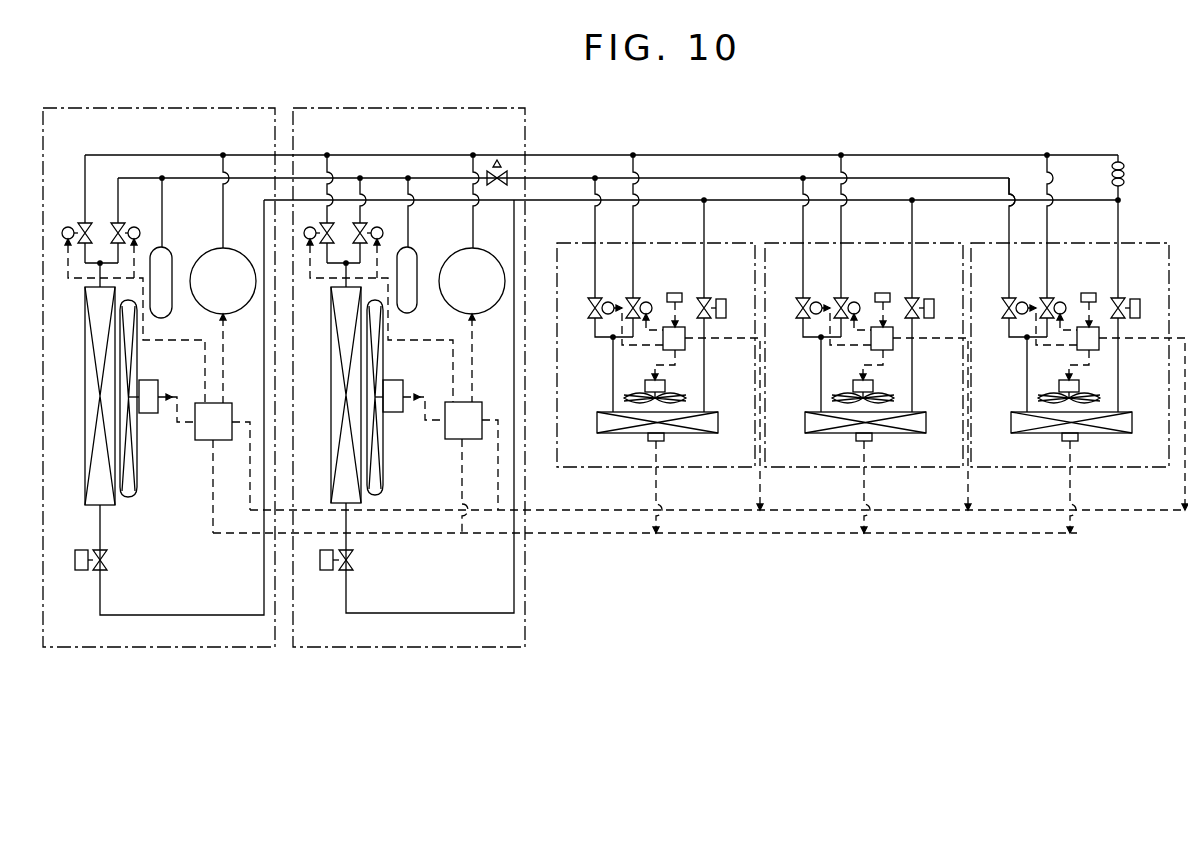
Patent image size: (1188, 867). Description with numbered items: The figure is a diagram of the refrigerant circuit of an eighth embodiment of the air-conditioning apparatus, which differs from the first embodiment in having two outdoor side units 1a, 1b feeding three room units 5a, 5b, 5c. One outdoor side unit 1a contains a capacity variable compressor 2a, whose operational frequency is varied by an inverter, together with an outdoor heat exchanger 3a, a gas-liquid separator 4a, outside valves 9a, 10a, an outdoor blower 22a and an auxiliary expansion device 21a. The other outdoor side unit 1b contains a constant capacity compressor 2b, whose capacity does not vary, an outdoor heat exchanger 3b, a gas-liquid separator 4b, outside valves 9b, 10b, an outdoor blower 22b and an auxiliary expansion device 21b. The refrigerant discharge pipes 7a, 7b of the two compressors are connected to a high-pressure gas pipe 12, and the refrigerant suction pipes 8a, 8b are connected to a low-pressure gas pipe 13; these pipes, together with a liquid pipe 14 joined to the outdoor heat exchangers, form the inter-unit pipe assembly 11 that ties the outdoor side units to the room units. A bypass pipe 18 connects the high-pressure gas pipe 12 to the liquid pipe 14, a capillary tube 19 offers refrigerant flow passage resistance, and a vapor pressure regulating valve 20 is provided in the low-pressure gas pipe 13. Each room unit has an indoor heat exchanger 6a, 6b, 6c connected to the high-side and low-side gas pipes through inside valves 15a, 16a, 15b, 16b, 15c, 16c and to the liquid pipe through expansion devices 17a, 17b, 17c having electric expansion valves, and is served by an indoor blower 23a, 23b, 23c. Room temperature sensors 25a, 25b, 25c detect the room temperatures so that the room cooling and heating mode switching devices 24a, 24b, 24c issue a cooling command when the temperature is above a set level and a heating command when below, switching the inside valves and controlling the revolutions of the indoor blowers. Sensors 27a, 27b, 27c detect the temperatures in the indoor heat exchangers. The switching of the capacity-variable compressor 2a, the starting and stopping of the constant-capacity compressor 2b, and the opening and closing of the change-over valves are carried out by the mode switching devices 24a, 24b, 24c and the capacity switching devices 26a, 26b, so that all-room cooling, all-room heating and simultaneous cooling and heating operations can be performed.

The outdoor side unit 1a is at (230, 648).
The outdoor side unit 1b is at (490, 650).
The capacity variable compressor 2a is at (233, 314).
The constant capacity compressor 2b is at (482, 314).
The outdoor heat exchanger 3a is at (85, 448).
The outdoor heat exchanger 3b is at (331, 440).
The gas-liquid separator 4a is at (172, 305).
The gas-liquid separator 4b is at (417, 305).
The room unit 5a is at (735, 243).
The room unit 5b is at (868, 339).
The room unit 5c is at (1073, 339).
The indoor heat exchanger 6a is at (700, 433).
The indoor heat exchanger 6b is at (874, 437).
The indoor heat exchanger 6c is at (1079, 437).
The refrigerant discharge pipe 7a is at (226, 221).
The refrigerant discharge pipe 7b is at (476, 221).
The refrigerant suction pipe 8a is at (165, 221).
The refrigerant suction pipe 8b is at (411, 221).
The outside valve 9a is at (72, 226).
The outside valve 9b is at (311, 226).
The outside valve 10a is at (132, 226).
The outside valve 10b is at (378, 226).
The inter-unit pipe assembly 11 is at (620, 126).
The high-pressure gas pipe 12 is at (547, 155).
The low-pressure gas pipe 13 is at (566, 178).
The liquid pipe 14 is at (582, 200).
The inside valve 15a is at (634, 296).
The inside valve 15b is at (856, 245).
The inside valve 15c is at (1062, 245).
The inside valve 16a is at (594, 320).
The inside valve 16b is at (820, 294).
The inside valve 16c is at (1026, 295).
The expansion device 17a is at (721, 299).
The expansion device 17b is at (929, 305).
The expansion device 17c is at (1135, 306).
The bypass pipe 18 is at (1123, 190).
The capillary tube 19 is at (1125, 166).
The vapor pressure regulating valve 20 is at (497, 160).
The auxiliary expansion device 21a is at (78, 572).
The auxiliary expansion device 21b is at (327, 572).
The outdoor blower 22a is at (148, 380).
The outdoor blower 22b is at (398, 380).
The indoor blower 23a is at (640, 396).
The indoor blower 23b is at (835, 388).
The indoor blower 23c is at (1042, 388).
The room cooling and heating mode switching device 24a is at (686, 342).
The room cooling and heating mode switching device 24b is at (915, 418).
The room cooling and heating mode switching device 24c is at (1127, 418).
The room temperature sensor 25a is at (675, 293).
The room temperature sensor 25b is at (885, 294).
The room temperature sensor 25c is at (1091, 294).
The capacity switching device 26a is at (200, 440).
The capacity switching device 26b is at (450, 439).
The sensor 27a is at (649, 441).
The sensor 27b is at (837, 483).
The sensor 27c is at (1043, 483).